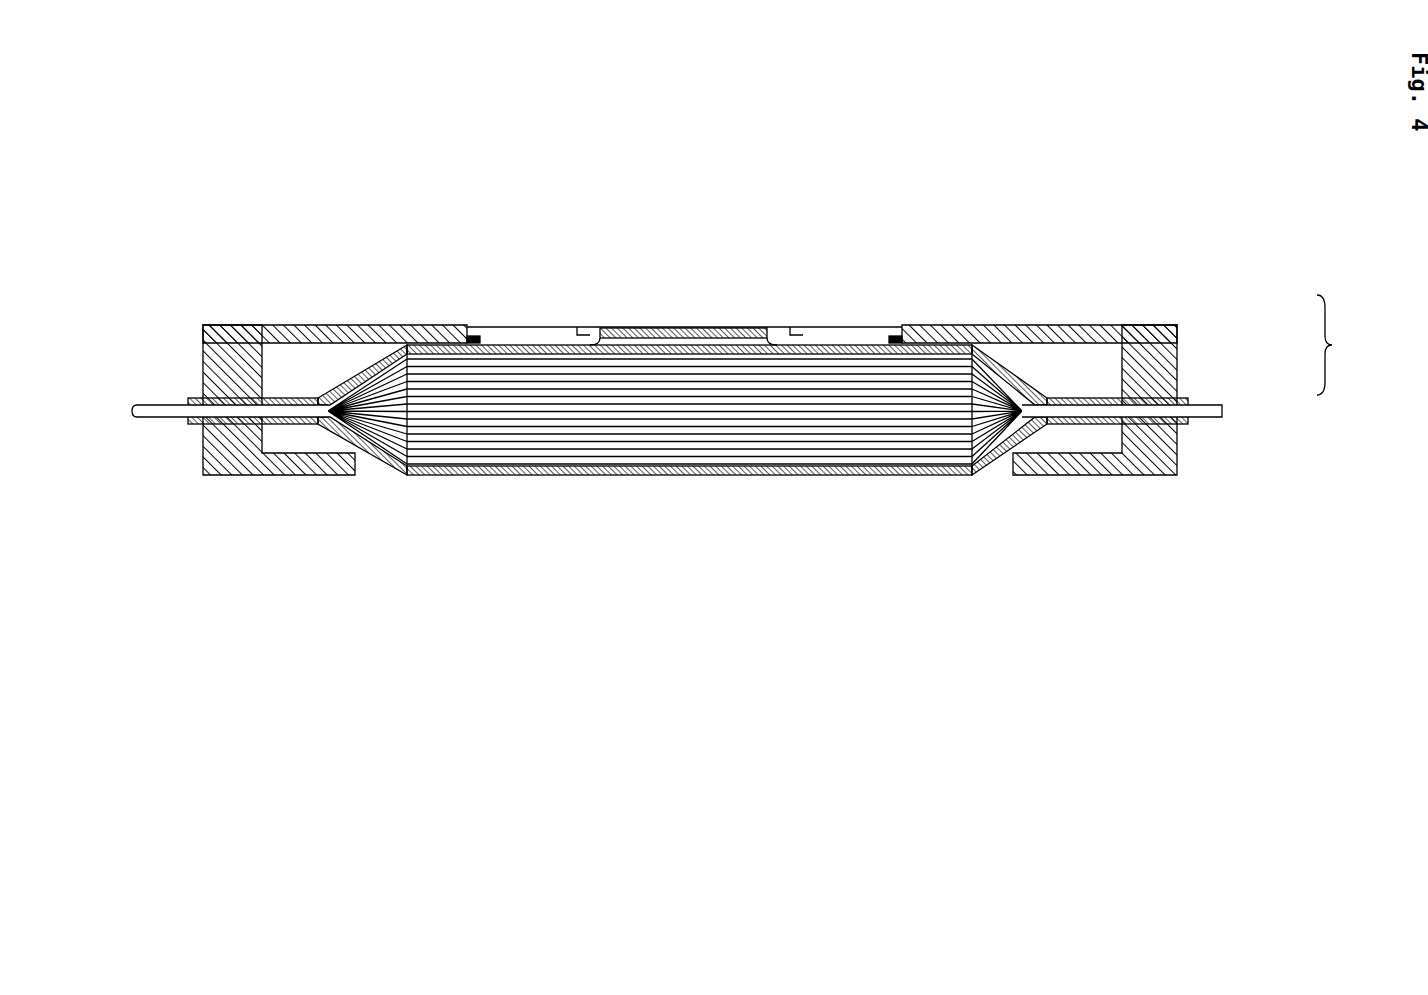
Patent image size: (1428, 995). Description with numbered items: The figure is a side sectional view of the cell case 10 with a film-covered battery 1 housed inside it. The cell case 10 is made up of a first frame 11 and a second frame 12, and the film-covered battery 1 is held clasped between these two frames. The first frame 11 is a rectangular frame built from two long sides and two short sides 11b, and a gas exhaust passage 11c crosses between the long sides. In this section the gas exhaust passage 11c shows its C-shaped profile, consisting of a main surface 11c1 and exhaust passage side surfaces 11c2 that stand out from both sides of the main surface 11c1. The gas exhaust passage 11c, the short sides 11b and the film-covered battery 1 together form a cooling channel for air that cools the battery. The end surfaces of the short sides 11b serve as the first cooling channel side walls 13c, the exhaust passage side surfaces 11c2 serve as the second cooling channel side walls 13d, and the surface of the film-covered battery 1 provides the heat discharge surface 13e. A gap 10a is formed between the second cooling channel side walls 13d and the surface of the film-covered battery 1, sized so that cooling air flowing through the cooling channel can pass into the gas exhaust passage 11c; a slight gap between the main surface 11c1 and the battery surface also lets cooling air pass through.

The film-covered battery 1 is at (780, 370).
The cell case 10 is at (1350, 345).
The gap 10a is at (767, 345).
The first frame 11 is at (1197, 370).
The short sides 11b is at (348, 325).
The gas exhaust passage 11c is at (676, 322).
The main surface 11c1 is at (720, 327).
The exhaust passage side surfaces 11c2 is at (570, 336).
The second frame 12 is at (1203, 449).
The first cooling channel side walls 13c is at (470, 337).
The second cooling channel side walls 13d is at (577, 327).
The heat discharge surface 13e is at (527, 345).